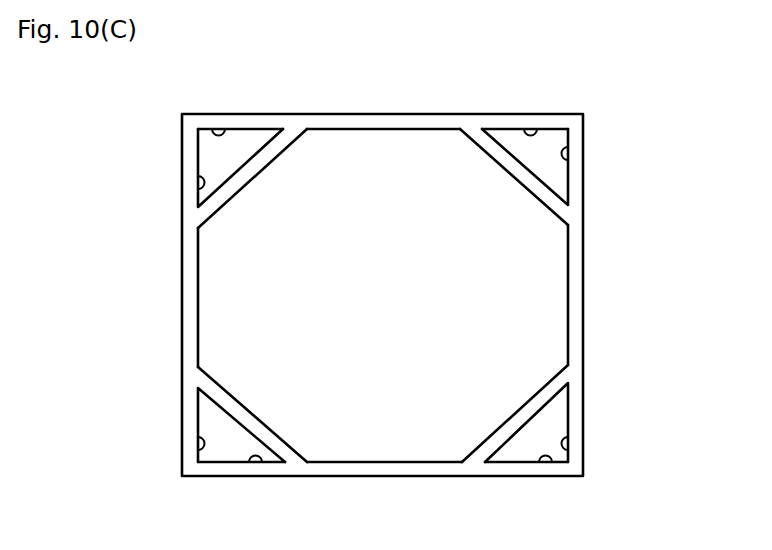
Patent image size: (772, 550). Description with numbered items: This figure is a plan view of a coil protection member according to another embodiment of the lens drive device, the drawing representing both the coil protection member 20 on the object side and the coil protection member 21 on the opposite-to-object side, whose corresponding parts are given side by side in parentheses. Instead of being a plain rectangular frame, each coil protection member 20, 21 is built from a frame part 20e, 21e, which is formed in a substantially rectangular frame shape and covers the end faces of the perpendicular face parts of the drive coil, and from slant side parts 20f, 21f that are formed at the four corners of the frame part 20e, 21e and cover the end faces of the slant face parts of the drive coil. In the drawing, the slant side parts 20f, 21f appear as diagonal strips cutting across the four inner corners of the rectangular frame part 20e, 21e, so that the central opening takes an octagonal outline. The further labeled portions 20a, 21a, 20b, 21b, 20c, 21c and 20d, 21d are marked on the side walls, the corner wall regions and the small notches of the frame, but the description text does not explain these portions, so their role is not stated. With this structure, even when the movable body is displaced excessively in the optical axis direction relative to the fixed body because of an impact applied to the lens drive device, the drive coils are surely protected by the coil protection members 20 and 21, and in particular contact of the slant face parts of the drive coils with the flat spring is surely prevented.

The coil protection member 20 is at (429, 295).
The coil protection member 21 is at (585, 298).
The side wall portion 20a is at (382, 279).
The side wall portion (alternative) 21a is at (180, 143).
The corner wall portion 20b is at (371, 282).
The corner wall portion (alternative) 21b is at (265, 114).
The side notch 20c is at (381, 292).
The side notch (alternative) 21c is at (198, 180).
The top/bottom notch 20d is at (381, 296).
The top/bottom notch (alternative) 21d is at (227, 129).
The frame part 20e is at (384, 268).
The frame part 21e is at (375, 121).
The slant side part 20f is at (383, 295).
The slant side part 21f is at (250, 176).